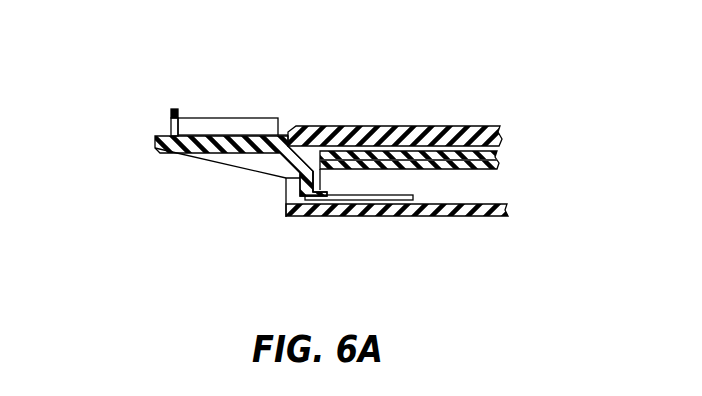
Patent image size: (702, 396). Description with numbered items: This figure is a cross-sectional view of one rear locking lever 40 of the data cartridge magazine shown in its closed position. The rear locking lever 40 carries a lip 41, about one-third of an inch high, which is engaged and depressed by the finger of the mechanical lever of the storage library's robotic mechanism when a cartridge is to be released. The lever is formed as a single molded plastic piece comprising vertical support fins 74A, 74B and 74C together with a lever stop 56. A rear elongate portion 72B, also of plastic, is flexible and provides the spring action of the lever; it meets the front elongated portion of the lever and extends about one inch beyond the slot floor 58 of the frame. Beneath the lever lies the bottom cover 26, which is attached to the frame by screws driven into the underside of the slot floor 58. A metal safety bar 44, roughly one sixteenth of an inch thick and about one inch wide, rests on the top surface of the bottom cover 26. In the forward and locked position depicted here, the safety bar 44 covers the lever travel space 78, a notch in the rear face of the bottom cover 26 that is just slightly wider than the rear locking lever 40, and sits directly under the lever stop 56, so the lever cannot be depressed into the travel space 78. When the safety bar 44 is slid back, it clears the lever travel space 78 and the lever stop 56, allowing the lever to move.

The rear locking lever 40 is at (150, 103).
The lip 41 is at (179, 108).
The vertical support fin 74A is at (249, 120).
The vertical support fin 74B is at (232, 162).
The vertical support fin 74C is at (296, 178).
The lever stop 56 is at (318, 190).
The slot floor 58 is at (468, 127).
The rear elongate portion 72B is at (487, 162).
The safety bar 44 is at (413, 192).
The lever travel space 78 is at (309, 206).
The bottom cover 26 is at (497, 217).